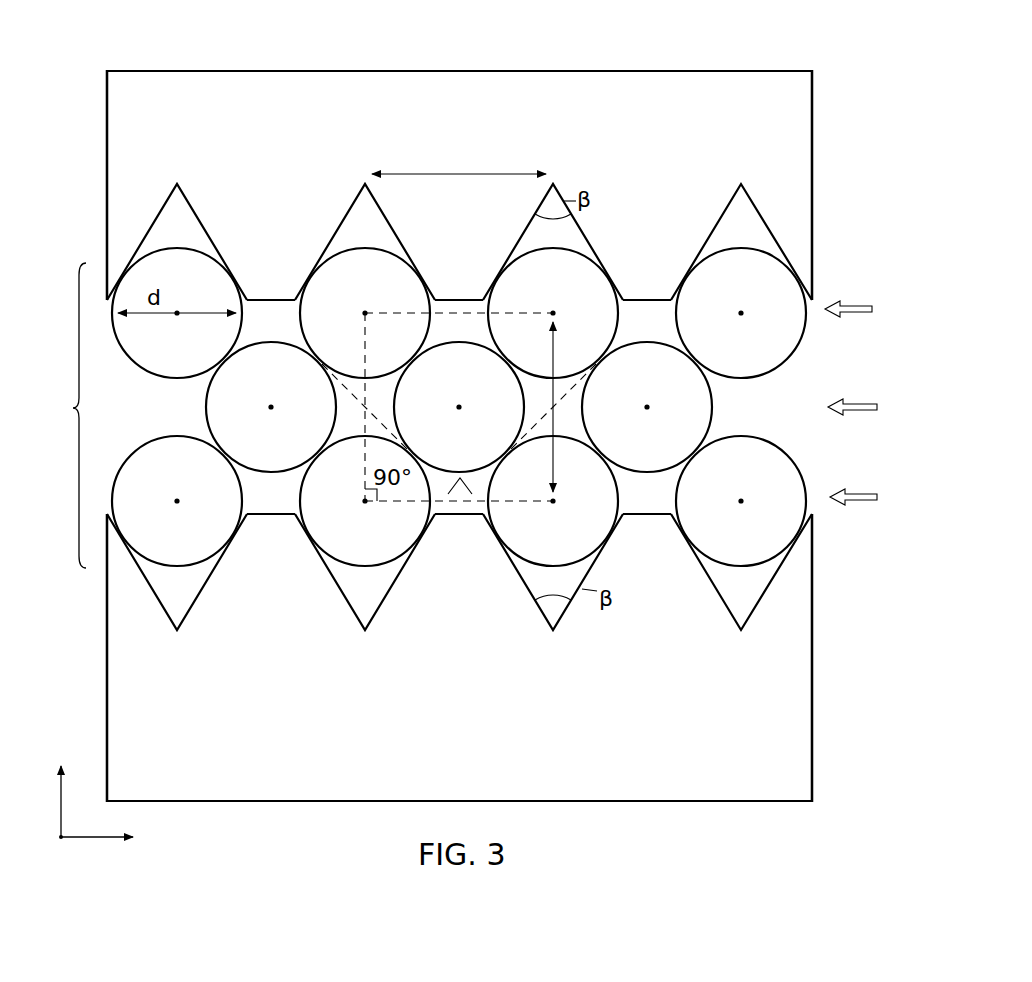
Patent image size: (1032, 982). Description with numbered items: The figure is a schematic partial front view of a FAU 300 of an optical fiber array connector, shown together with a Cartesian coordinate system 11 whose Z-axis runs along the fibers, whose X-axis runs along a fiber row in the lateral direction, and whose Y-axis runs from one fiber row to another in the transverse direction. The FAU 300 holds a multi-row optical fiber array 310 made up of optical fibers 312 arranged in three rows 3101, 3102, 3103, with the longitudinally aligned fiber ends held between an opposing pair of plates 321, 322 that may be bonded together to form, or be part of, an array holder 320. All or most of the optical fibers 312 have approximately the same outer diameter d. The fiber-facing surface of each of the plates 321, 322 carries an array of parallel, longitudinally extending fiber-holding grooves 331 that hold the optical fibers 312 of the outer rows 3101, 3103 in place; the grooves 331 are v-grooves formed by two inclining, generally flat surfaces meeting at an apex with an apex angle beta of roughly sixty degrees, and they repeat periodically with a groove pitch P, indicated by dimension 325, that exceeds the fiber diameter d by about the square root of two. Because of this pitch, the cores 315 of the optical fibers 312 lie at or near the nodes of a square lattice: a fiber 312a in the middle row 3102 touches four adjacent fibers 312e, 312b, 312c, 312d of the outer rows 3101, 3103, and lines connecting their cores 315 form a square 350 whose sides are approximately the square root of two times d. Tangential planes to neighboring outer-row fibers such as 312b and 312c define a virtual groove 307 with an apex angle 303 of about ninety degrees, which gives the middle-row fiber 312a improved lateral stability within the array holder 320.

The FAU 300 is at (459, 404).
The array holder 320 is at (227, 44).
The plate 321 is at (459, 185).
The plate 322 is at (459, 657).
The fiber-holding grooves 331 is at (158, 217).
The optical fibers 312 is at (252, 318).
The optical fiber 312a is at (459, 407).
The optical fiber 312b is at (365, 501).
The optical fiber 312c is at (553, 501).
The optical fiber 312d is at (553, 313).
The optical fiber 312e is at (365, 313).
The cores 315 is at (364, 311).
The pitch P 325 is at (453, 170).
The square 350 is at (452, 312).
The virtual groove 307 is at (363, 403).
The apex angle 303 is at (458, 497).
The optical fiber array 310 is at (51, 415).
The row 3101 is at (876, 314).
The row 3102 is at (879, 414).
The row 3103 is at (881, 503).
The coordinate system 11 is at (75, 875).